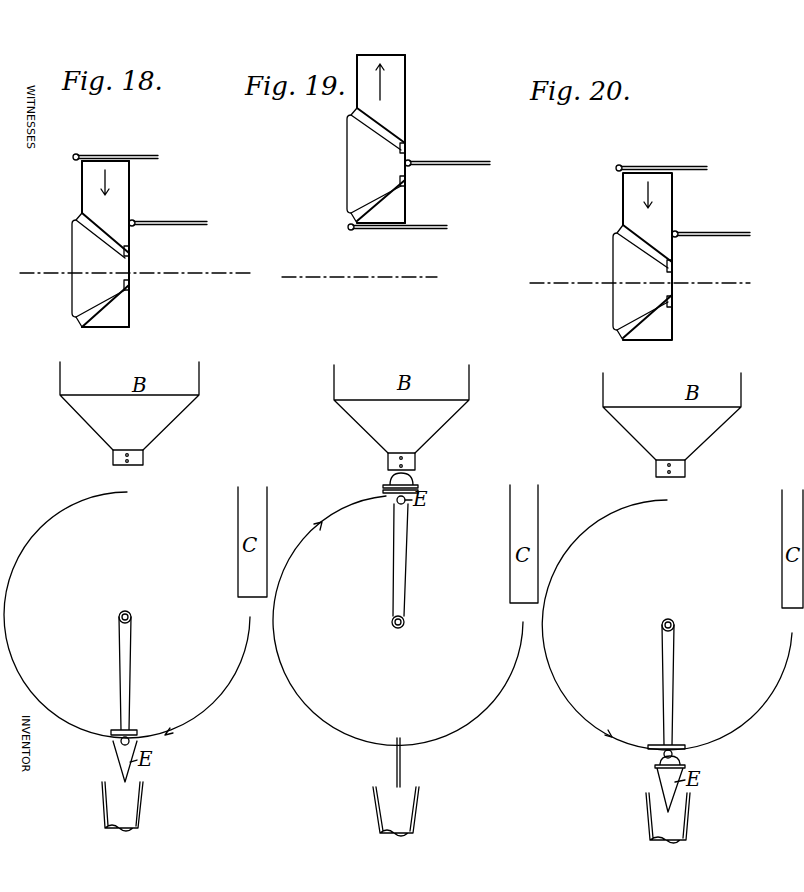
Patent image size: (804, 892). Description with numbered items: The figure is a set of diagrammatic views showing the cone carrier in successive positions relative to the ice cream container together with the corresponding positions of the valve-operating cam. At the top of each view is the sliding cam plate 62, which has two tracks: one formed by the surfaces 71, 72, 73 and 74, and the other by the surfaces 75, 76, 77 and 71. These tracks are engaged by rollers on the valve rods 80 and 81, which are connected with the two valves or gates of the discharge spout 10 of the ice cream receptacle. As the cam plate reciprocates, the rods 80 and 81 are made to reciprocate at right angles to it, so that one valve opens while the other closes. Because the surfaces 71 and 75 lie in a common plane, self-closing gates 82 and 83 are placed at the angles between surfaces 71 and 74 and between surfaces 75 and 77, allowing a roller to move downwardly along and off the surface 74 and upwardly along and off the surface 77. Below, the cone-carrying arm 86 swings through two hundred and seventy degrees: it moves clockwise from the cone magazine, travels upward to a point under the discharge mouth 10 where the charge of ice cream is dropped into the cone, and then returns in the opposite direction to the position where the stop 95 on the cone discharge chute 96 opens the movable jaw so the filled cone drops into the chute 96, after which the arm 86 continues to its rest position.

In FIG. 18, the discharge spout 10 is at (143, 456).
In FIG. 19, the discharge spout 10 is at (415, 465).
In FIG. 20, the discharge spout 10 is at (685, 469).
In FIG. 18, the sliding cam plate 62 is at (91, 270).
In FIG. 19, the sliding cam plate 62 is at (366, 165).
In FIG. 20, the sliding cam plate 62 is at (640, 278).
In FIG. 18, the track surface 71 is at (129, 196).
In FIG. 19, the track surface 71 is at (405, 99).
In FIG. 18, the track surface 72 is at (115, 161).
In FIG. 19, the track surface 72 is at (402, 55).
In FIG. 18, the track surface 73 is at (82, 191).
In FIG. 19, the track surface 73 is at (357, 97).
In FIG. 18, the track surface 74 is at (98, 231).
In FIG. 19, the track surface 74 is at (376, 125).
In FIG. 18, the track surface 75 is at (129, 305).
In FIG. 19, the track surface 75 is at (405, 197).
In FIG. 18, the track surface 76 is at (112, 327).
In FIG. 19, the track surface 76 is at (381, 213).
In FIG. 18, the track surface 77 is at (106, 300).
In FIG. 19, the track surface 77 is at (382, 198).
In FIG. 18, the valve rod 80 is at (150, 157).
In FIG. 19, the valve rod 80 is at (448, 163).
In FIG. 20, the valve rod 80 is at (688, 168).
In FIG. 18, the valve rod 81 is at (185, 223).
In FIG. 19, the valve rod 81 is at (410, 227).
In FIG. 20, the valve rod 81 is at (698, 234).
In FIG. 18, the self-closing gate 82 is at (129, 250).
In FIG. 19, the self-closing gate 82 is at (405, 147).
In FIG. 18, the self-closing gate 83 is at (129, 288).
In FIG. 19, the self-closing gate 83 is at (405, 181).
In FIG. 18, the cone-carrying arm 86 is at (131, 690).
In FIG. 19, the cone-carrying arm 86 is at (405, 585).
In FIG. 20, the cone-carrying arm 86 is at (675, 683).
In FIG. 19, the stop 95 is at (400, 765).
In FIG. 18, the cone discharge chute 96 is at (143, 803).
In FIG. 19, the cone discharge chute 96 is at (419, 808).
In FIG. 20, the cone discharge chute 96 is at (690, 813).